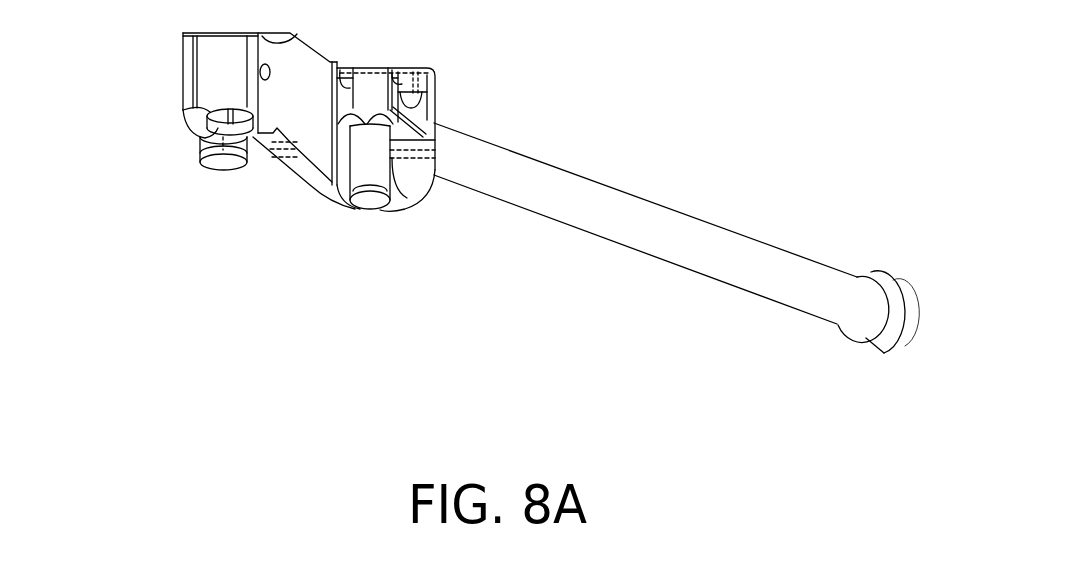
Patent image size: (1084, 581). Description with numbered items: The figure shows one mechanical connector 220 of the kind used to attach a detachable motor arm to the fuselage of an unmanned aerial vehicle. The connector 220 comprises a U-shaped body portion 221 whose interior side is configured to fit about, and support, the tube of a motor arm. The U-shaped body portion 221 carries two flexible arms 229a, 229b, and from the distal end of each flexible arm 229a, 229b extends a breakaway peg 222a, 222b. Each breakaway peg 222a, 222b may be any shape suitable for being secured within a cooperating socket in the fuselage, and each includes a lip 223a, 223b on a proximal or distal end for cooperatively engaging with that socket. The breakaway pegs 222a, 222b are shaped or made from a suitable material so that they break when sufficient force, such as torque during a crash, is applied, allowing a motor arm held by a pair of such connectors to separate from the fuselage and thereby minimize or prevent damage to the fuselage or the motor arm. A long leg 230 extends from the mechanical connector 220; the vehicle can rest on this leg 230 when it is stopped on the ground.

The mechanical connector 220 is at (407, 182).
The U-shaped body portion 221 is at (343, 178).
The breakaway peg 222a is at (368, 202).
The breakaway peg 222b is at (223, 163).
The lip 223a is at (412, 125).
The lip 223b is at (200, 138).
The flexible arm 229a is at (370, 82).
The flexible arm 229b is at (183, 75).
The leg 230 is at (650, 220).